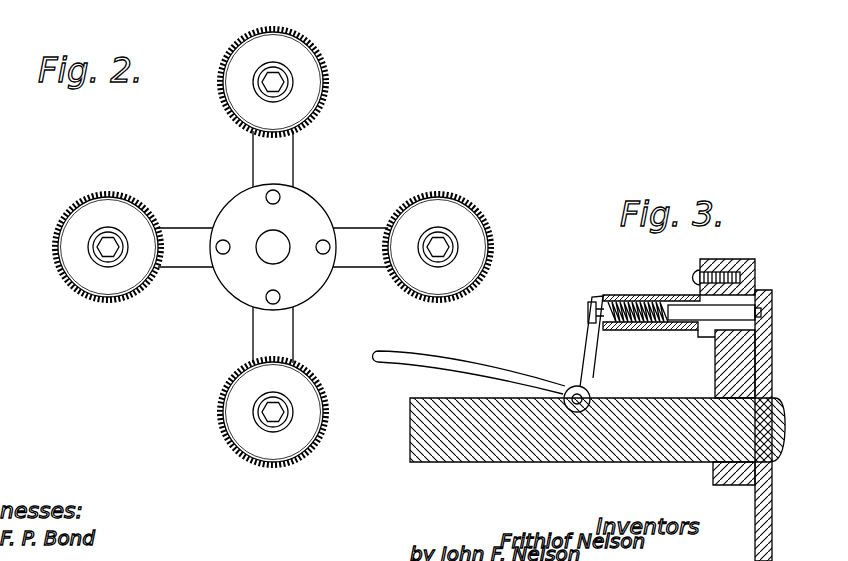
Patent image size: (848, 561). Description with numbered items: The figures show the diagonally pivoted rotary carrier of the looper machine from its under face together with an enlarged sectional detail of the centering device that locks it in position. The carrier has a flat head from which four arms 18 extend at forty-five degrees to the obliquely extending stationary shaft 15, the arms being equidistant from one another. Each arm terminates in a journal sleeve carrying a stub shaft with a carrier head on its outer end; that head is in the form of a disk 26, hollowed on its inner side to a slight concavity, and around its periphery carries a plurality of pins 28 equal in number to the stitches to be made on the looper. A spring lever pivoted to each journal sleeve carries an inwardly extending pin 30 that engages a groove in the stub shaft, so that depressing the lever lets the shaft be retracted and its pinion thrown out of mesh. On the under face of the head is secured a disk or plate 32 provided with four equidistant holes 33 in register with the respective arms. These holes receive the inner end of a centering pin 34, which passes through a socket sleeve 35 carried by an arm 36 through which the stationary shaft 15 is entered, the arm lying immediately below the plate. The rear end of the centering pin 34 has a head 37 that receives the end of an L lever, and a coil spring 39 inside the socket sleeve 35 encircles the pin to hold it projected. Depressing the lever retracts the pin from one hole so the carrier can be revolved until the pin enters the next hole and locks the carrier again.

In FIG. 3, the stationary shaft 15 is at (580, 450).
In FIG. 2, the arms 18 is at (273, 247).
In FIG. 2, the disk 26 is at (320, 84).
In FIG. 2, the pins 28 is at (328, 64).
In FIG. 3, the pin 30 is at (540, 376).
In FIG. 2, the disk or plate 32 is at (304, 207).
In FIG. 3, the disk or plate 32 is at (755, 492).
In FIG. 2, the holes 33 is at (327, 245).
In FIG. 3, the holes 33 is at (765, 292).
In FIG. 3, the centering pin 34 is at (680, 305).
In FIG. 3, the socket sleeve 35 is at (622, 300).
In FIG. 3, the arm 36 is at (722, 358).
In FIG. 3, the head 37 is at (587, 302).
In FIG. 3, the coil spring 39 is at (645, 330).